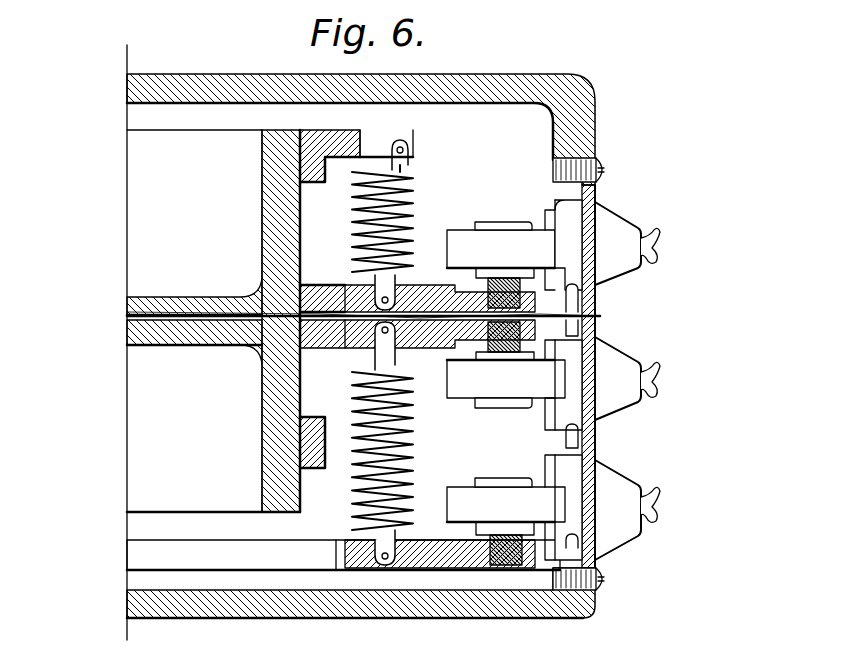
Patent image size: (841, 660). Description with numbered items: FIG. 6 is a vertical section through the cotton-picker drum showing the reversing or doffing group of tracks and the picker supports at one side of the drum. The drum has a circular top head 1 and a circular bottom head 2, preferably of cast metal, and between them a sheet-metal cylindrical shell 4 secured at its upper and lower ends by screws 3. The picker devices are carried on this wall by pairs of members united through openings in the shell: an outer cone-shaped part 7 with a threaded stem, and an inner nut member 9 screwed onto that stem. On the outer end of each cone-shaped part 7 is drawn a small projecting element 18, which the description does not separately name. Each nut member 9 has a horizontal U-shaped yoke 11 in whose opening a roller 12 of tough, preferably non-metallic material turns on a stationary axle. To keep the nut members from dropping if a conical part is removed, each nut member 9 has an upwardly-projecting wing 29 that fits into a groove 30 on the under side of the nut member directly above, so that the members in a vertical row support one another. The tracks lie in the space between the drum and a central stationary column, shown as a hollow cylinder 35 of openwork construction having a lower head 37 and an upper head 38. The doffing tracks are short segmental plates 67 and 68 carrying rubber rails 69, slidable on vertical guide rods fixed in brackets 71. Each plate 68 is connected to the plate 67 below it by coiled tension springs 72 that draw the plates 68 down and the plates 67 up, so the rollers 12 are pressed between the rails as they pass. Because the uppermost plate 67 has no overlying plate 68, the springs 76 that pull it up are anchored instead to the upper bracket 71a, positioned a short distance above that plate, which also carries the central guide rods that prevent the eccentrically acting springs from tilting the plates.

The top head 1 is at (210, 76).
The bottom head 2 is at (380, 612).
The screws 3 is at (606, 170).
The cylindrical shell 4 is at (590, 232).
The outer cone-shaped part 7 is at (636, 272).
The nut member 9 is at (563, 380).
The yoke 11 is at (455, 240).
The roller 12 is at (500, 222).
The terminal knob 18 is at (658, 242).
The wing 29 is at (598, 316).
The groove 30 is at (580, 290).
The hollow cylinder 35 is at (262, 418).
The lower head 37 is at (180, 346).
The upper head 38 is at (168, 297).
The segmental plate 67 is at (338, 290).
The segmental plate 68 is at (385, 345).
The rubber rail 69 is at (503, 278).
The bracket 71 is at (315, 418).
The upper bracket 71a is at (413, 143).
The coiled tension spring 72 is at (414, 470).
The spring 76 is at (405, 200).